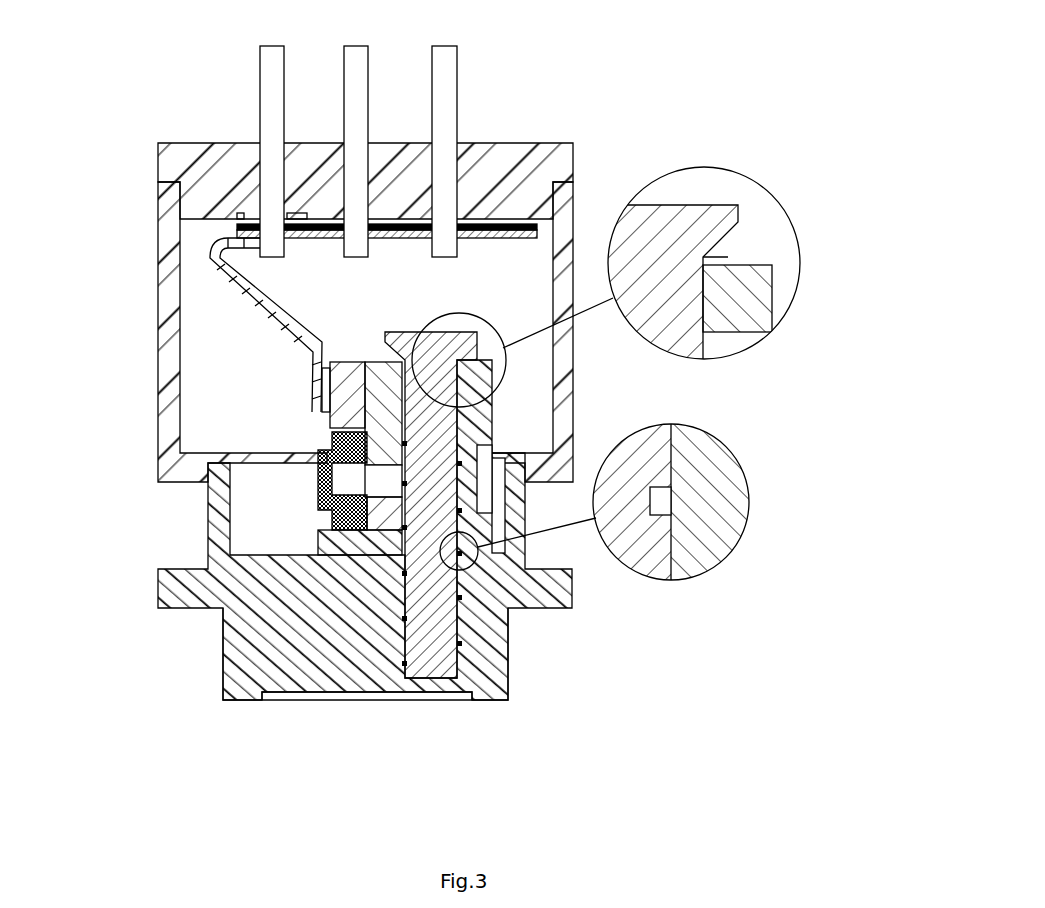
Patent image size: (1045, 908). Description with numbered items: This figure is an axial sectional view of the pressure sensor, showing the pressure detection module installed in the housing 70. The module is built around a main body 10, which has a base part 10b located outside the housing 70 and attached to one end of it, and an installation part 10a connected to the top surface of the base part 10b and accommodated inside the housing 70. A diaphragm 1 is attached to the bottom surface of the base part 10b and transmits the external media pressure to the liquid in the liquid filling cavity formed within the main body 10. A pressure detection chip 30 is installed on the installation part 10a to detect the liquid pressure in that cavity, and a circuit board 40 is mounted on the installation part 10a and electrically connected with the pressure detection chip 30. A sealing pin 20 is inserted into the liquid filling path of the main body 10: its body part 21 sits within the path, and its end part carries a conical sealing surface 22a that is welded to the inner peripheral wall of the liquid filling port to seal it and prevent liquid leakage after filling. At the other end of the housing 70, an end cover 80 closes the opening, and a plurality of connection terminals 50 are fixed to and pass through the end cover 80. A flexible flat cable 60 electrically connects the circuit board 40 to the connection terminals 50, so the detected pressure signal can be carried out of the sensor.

The diaphragm 1 is at (366, 702).
The main body 10 is at (510, 648).
The installation part 10a is at (480, 430).
The base part 10b is at (240, 645).
The sealing pin 20 is at (409, 345).
The body part 21 is at (671, 508).
The conical sealing surface 22a is at (727, 255).
The pressure detection chip 30 is at (317, 488).
The circuit board 40 is at (330, 427).
The connection terminals 50 is at (270, 78).
The flexible flat cable 60 is at (277, 303).
The housing 70 is at (173, 352).
The end cover 80 is at (493, 160).